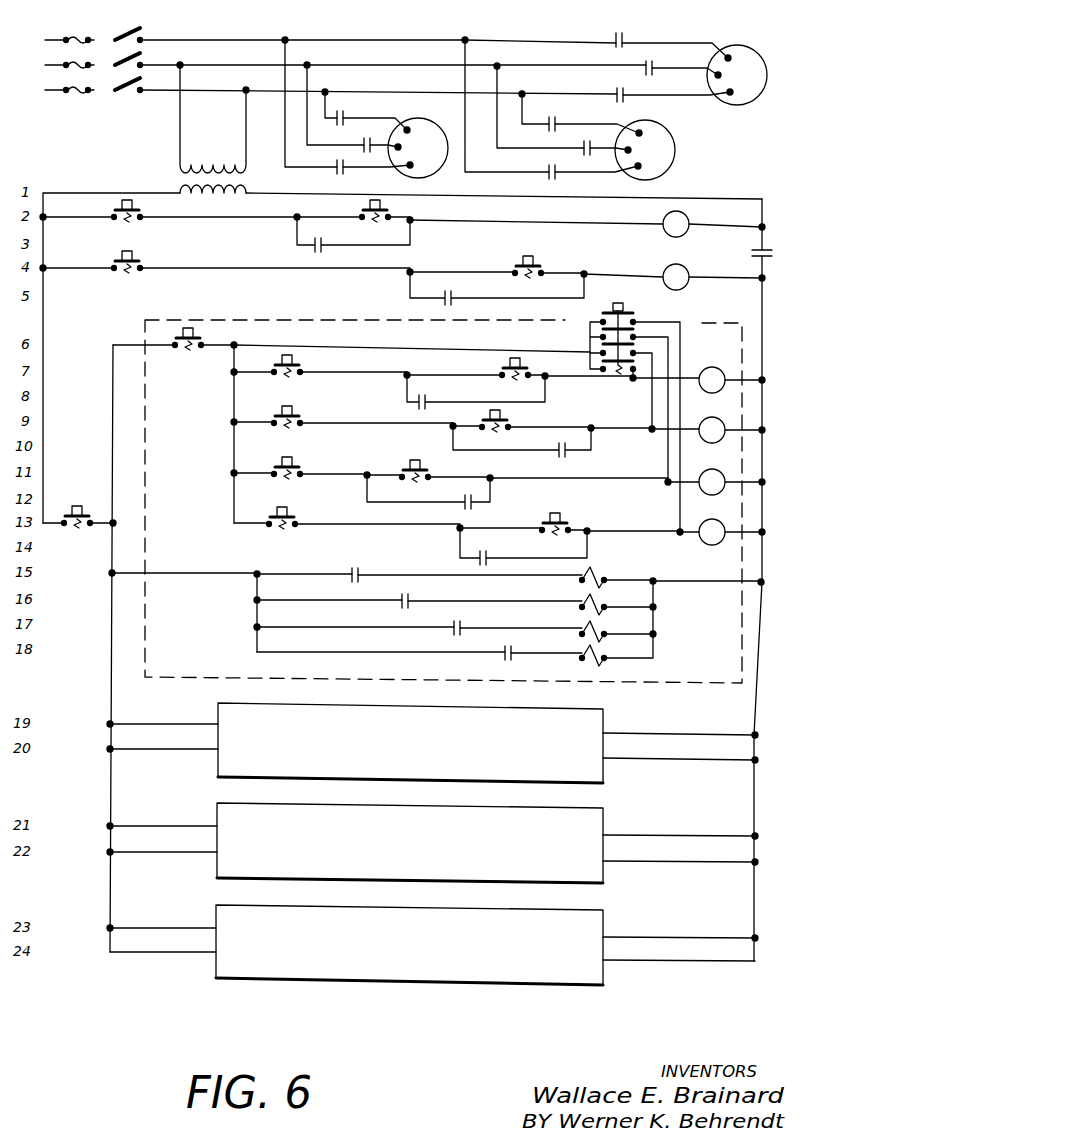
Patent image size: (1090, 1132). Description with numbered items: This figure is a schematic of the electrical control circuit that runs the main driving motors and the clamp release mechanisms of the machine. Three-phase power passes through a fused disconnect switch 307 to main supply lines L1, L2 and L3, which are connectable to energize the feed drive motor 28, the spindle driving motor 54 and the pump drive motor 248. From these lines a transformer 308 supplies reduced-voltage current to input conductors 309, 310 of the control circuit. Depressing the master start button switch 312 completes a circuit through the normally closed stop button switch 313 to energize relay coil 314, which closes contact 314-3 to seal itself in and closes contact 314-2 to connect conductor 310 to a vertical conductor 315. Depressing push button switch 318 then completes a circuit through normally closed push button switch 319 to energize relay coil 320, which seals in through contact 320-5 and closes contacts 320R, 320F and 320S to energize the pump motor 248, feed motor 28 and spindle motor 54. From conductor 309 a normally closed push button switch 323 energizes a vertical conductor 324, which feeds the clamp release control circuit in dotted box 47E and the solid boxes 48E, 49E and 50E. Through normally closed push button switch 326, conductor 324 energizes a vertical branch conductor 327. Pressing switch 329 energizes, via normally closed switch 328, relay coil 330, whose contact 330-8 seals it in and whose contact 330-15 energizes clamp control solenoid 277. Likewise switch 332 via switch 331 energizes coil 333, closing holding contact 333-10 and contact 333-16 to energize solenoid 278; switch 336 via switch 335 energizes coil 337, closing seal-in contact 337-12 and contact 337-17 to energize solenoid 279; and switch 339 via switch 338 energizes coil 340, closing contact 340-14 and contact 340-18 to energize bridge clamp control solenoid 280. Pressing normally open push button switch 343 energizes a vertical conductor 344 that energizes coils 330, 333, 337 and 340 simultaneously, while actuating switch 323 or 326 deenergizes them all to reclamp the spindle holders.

The main supply line L1 is at (207, 40).
The main supply line L2 is at (251, 65).
The main supply line L3 is at (231, 90).
The fused disconnect switch 307 is at (112, 24).
The transformer 308 is at (173, 182).
The input conductor 309 is at (45, 208).
The input conductor 310 is at (308, 194).
The pump drive motor 248 is at (448, 110).
The feed drive motor 28 is at (674, 149).
The spindle driving motor 54 is at (733, 104).
The normally open contacts 320R is at (337, 152).
The normally open contacts 320F is at (548, 175).
The normally open contact 320S is at (617, 84).
The master start button switch 312 is at (393, 212).
The stop button switch 313 is at (118, 230).
The relay coil 314 is at (664, 218).
The normally open contact 314-2 is at (752, 253).
The normally open contact 314-3 is at (312, 248).
The vertical conductor 315 is at (762, 303).
The push button switch 318 is at (511, 262).
The push button switch 319 is at (118, 281).
The relay coil 320 is at (665, 273).
The normally open contact 320-5 is at (452, 304).
The push button switch 323 is at (77, 510).
The vertical conductor 324 is at (111, 677).
The push button switch 326 is at (202, 340).
The vertical branch conductor 327 is at (234, 396).
The push button switch 328 is at (302, 378).
The push button switch 329 is at (501, 366).
The relay coil 330 is at (725, 353).
The normally open contact 330-8 is at (429, 400).
The normally open contact 330-15 is at (348, 580).
The push button switch 331 is at (301, 418).
The switch 332 is at (511, 418).
The relay coil 333 is at (725, 405).
The normally open contact 333-10 is at (570, 454).
The normally open contact 333-16 is at (412, 602).
The normally closed switch 335 is at (299, 464).
The normally open switch 336 is at (432, 468).
The relay coil 337 is at (725, 457).
The normally open seal in contact 337-12 is at (466, 504).
The contact 337-17 is at (455, 631).
The normally closed switch 338 is at (270, 541).
The push button switch 339 is at (572, 518).
The relay coil 340 is at (713, 546).
The normally open contact 340-14 is at (482, 561).
The normally open contact 340-18 is at (508, 659).
The push button switch 343 is at (626, 302).
The vertical conductor 344 is at (590, 324).
The clamp control solenoid 277 is at (599, 579).
The clamp control solenoid 278 is at (584, 611).
The clamp control solenoid 279 is at (587, 636).
The bridge clamp control solenoid 280 is at (600, 662).
The clamp release control circuit 47E is at (326, 320).
The clamp release circuit 48E is at (214, 708).
The clamp release circuit 49E is at (215, 811).
The clamp release circuit 50E is at (212, 978).